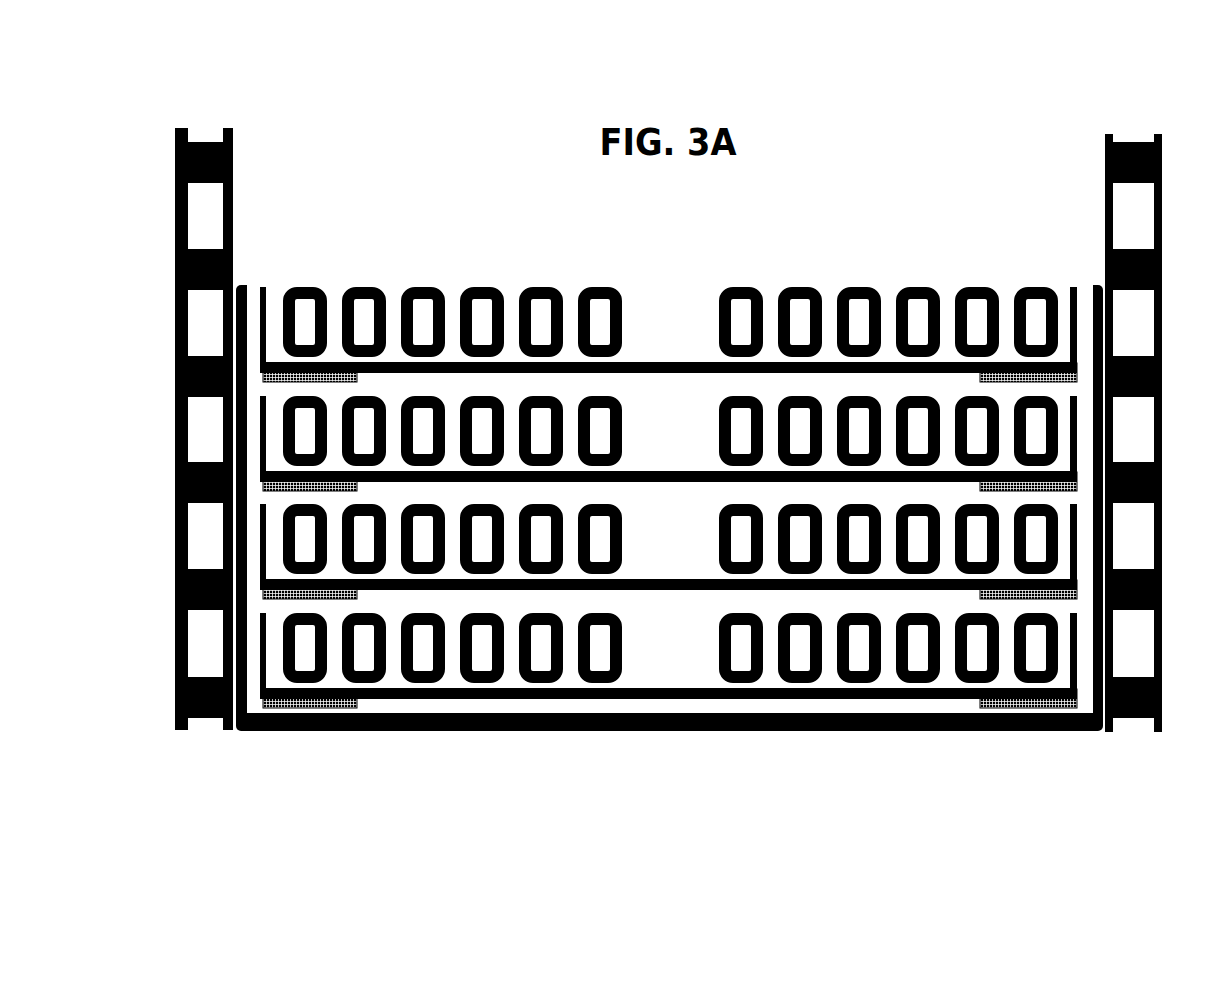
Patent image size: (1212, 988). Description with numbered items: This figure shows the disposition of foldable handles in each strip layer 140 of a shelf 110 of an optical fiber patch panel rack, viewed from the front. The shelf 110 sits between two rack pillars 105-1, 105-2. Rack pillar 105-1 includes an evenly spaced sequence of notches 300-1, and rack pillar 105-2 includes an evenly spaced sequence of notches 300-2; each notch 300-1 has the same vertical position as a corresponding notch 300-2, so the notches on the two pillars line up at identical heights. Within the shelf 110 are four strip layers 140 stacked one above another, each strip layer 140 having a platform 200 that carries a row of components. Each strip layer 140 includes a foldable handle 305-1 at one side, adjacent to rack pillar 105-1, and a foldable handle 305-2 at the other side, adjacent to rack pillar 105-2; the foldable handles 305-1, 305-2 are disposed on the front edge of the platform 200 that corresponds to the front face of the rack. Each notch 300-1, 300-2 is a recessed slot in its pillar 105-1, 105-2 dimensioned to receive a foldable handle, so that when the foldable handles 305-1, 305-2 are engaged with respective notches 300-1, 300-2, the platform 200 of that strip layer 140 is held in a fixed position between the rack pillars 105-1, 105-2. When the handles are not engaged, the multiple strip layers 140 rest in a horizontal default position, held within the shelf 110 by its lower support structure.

The rack pillar 105-1 is at (207, 117).
The rack pillar 105-2 is at (1130, 123).
The shelf 110 is at (668, 742).
The strip layer 140 is at (668, 690).
The platform 200 is at (507, 384).
The notch 300-1 is at (128, 163).
The notch 300-2 is at (1207, 163).
The foldable handle 305-1 is at (313, 720).
The foldable handle 305-2 is at (1023, 720).